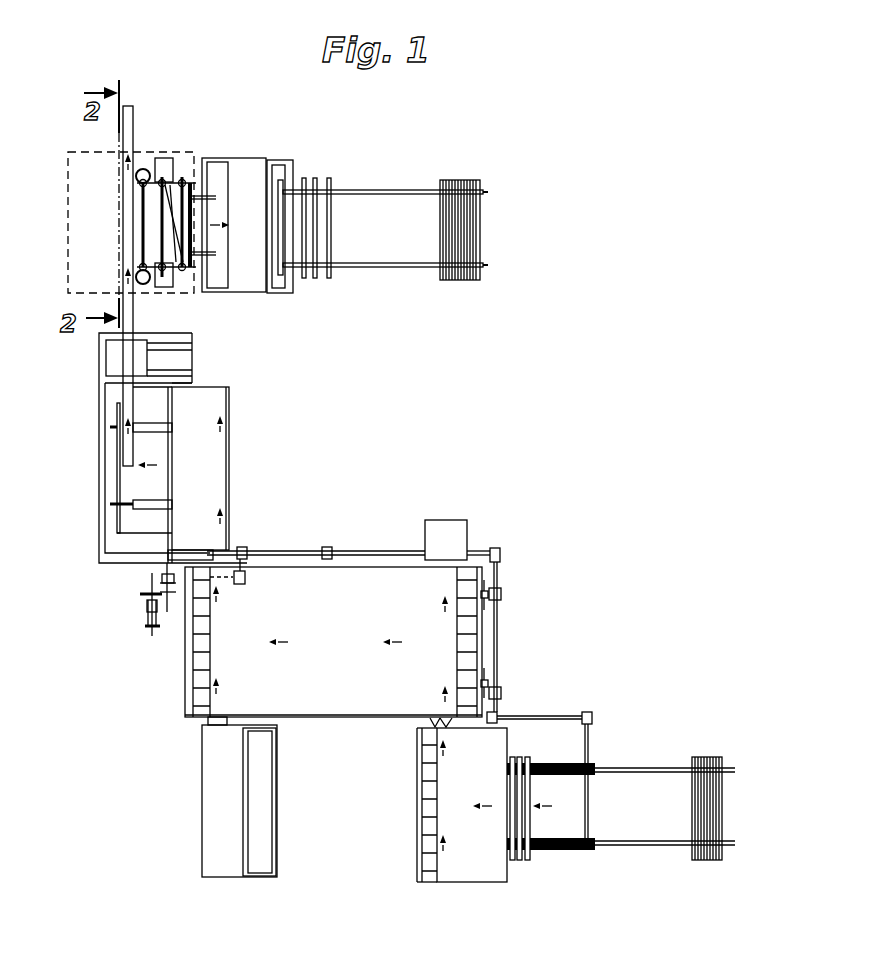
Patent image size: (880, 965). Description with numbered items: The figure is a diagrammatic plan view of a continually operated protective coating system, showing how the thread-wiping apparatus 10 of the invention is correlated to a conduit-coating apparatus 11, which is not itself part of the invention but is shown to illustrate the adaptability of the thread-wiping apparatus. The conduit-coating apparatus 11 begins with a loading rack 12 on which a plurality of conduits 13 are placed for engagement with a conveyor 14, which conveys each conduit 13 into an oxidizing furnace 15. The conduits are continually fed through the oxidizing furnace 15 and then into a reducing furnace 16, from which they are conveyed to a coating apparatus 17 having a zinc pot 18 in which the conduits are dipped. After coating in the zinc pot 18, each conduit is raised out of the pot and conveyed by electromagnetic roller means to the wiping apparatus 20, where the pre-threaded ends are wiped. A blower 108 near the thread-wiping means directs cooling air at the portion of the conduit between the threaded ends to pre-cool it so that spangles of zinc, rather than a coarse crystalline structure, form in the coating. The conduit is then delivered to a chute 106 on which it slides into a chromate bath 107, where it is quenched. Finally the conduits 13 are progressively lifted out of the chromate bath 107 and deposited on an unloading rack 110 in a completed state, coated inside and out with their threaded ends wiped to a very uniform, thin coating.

The thread-wiping apparatus 10 is at (183, 133).
The conduit-coating apparatus 11 is at (370, 530).
The loading rack 12 is at (618, 770).
The conduit 13 is at (710, 800).
The conveyor 14 is at (566, 750).
The oxidizing furnace 15 is at (479, 796).
The reducing furnace 16 is at (345, 614).
The coating apparatus 17 is at (222, 449).
The zinc pot 18 is at (113, 444).
The wiping apparatus 20 is at (134, 318).
The chute 106 is at (192, 253).
The chromate bath 107 is at (222, 178).
The blower 108 is at (168, 218).
The unloading rack 110 is at (364, 271).